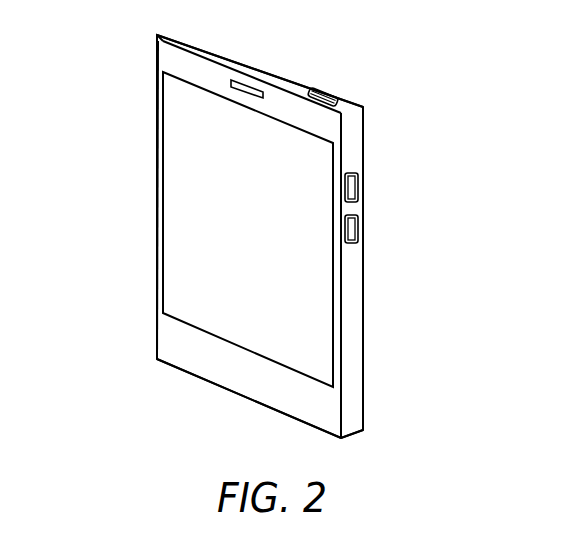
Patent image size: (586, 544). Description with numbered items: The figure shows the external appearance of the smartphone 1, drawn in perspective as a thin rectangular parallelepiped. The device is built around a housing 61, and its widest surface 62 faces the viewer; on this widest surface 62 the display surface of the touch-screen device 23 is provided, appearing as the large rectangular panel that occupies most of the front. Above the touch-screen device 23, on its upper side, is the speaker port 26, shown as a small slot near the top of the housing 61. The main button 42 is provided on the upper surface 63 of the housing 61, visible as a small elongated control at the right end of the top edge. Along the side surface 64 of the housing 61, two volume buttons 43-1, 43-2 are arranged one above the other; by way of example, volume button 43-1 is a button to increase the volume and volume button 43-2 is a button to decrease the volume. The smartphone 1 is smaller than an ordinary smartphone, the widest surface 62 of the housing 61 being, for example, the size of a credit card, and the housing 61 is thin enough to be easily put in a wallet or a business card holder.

The smartphone 1 is at (93, 91).
The touch-screen device 23 is at (168, 173).
The speaker port 26 is at (248, 84).
The main button 42 is at (321, 90).
The volume button 43-1 is at (359, 188).
The volume button 43-2 is at (359, 228).
The housing 61 is at (157, 56).
The widest surface 62 is at (170, 342).
The upper surface 63 is at (209, 49).
The side surface 64 is at (352, 299).